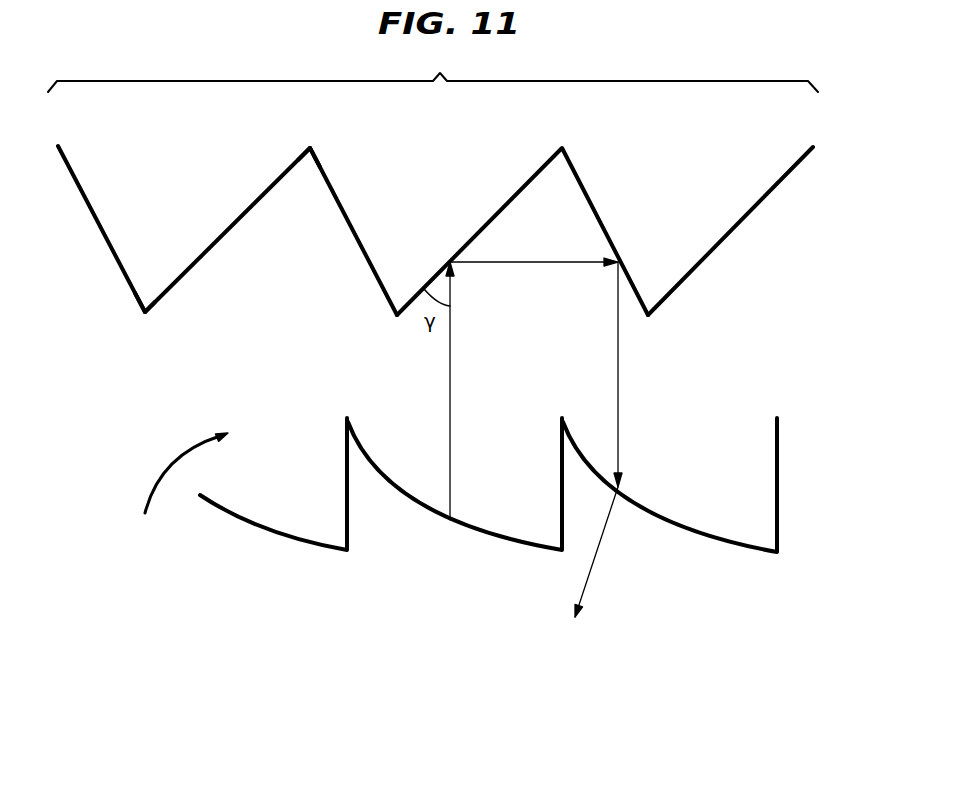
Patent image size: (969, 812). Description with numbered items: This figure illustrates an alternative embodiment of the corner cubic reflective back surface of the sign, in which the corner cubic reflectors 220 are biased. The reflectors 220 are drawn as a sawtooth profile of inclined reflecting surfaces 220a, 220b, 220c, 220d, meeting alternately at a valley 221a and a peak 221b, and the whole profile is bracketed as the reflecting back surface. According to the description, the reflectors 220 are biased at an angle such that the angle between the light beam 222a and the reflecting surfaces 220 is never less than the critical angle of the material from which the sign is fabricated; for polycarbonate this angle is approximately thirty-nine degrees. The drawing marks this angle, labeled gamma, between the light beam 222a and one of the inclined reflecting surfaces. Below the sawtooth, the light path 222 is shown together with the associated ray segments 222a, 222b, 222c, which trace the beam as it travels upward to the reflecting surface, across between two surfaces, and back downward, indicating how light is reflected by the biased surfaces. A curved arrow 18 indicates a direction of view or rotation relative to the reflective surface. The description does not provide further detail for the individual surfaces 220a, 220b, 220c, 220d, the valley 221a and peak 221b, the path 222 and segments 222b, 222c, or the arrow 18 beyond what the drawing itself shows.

The direction of rotation 18 is at (180, 491).
The corner cubic reflectors 220 is at (461, 273).
The first flank 220a is at (100, 230).
The second flank 220b is at (232, 222).
The third flank 220c is at (362, 245).
The fourth flank 220d is at (720, 242).
The valley of profile 221a is at (145, 315).
The peak of profile 221b is at (310, 148).
The cutting path curves 222 is at (447, 520).
The light beam 222a is at (422, 391).
The horizontal dimension 222b is at (534, 279).
The vertical dimension 222c is at (626, 439).